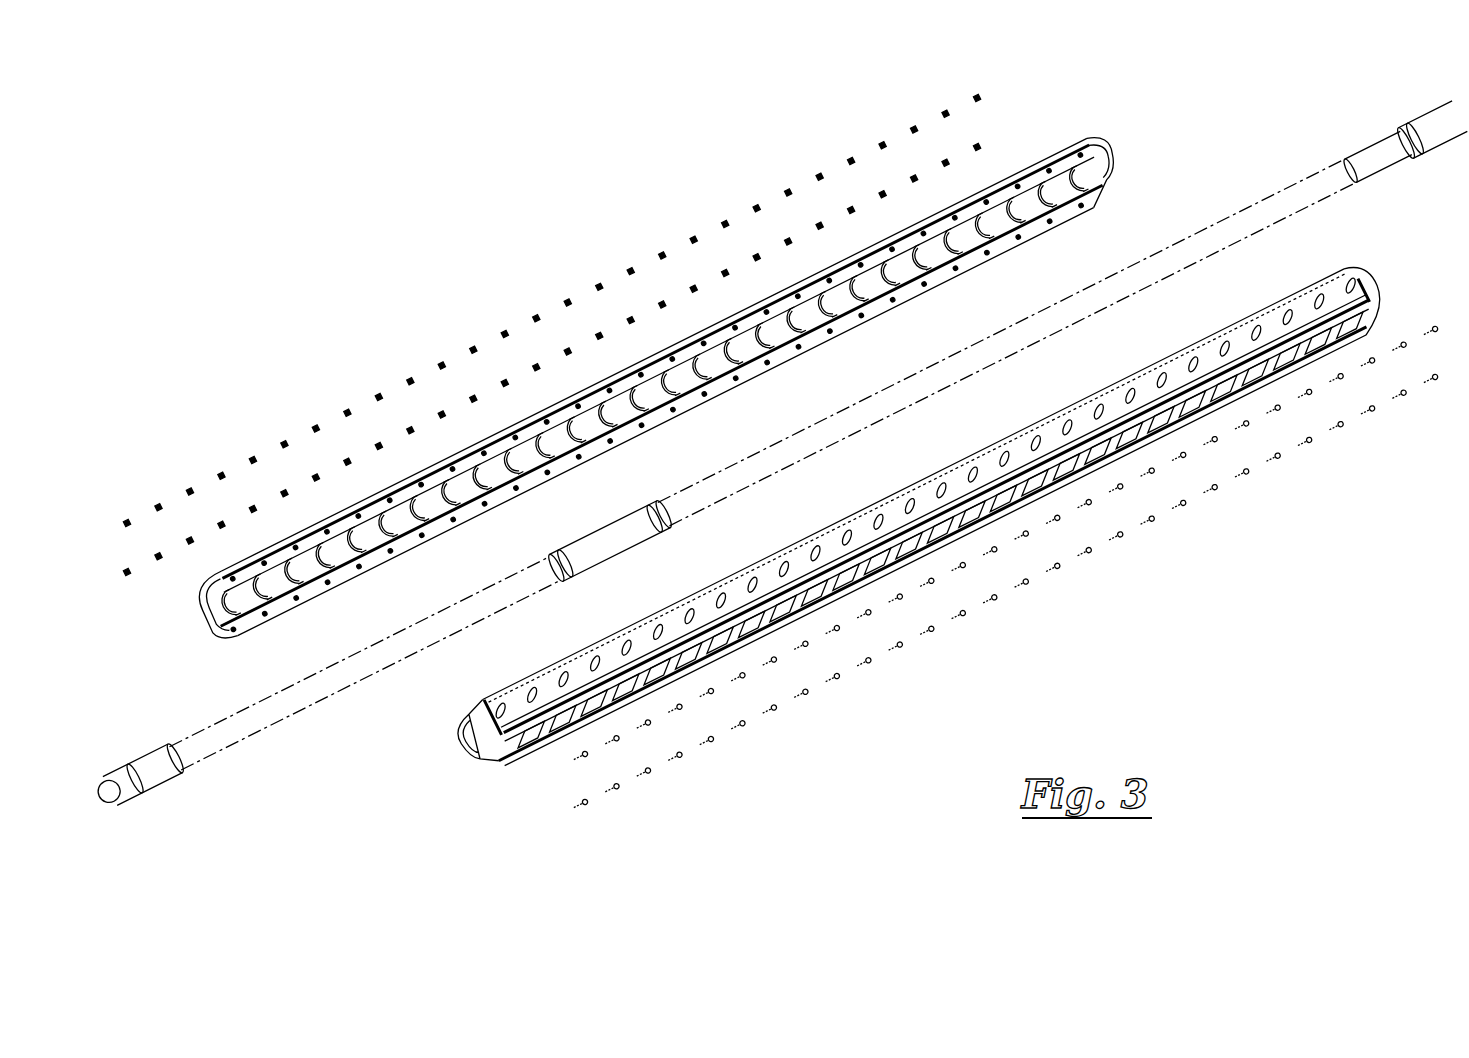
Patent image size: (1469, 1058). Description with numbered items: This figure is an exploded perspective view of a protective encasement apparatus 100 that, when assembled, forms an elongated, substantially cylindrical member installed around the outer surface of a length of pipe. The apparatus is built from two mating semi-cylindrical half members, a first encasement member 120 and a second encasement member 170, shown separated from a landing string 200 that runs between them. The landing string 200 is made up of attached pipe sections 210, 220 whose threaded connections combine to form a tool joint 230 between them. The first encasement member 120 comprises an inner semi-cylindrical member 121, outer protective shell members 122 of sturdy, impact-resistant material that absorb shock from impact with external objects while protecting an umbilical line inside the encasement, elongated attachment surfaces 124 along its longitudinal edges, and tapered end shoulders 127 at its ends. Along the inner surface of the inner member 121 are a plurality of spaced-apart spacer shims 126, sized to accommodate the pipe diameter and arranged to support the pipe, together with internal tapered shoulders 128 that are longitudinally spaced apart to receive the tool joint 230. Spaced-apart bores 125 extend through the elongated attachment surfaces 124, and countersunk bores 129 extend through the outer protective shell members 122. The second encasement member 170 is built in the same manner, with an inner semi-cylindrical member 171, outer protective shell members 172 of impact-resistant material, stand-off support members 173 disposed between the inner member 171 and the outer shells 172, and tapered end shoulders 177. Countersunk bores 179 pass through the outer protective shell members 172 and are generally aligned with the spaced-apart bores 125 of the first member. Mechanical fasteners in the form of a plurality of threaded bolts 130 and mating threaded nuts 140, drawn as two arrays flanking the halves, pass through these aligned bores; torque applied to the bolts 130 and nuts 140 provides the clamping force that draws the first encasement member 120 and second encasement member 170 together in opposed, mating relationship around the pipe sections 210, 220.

The encasement apparatus 100 is at (561, 225).
The first encasement member 120 is at (1062, 150).
The inner semi-cylindrical member 121 is at (492, 478).
The outer protective shell members 122 is at (1030, 155).
The elongated attachment surfaces 124 is at (1093, 195).
The spaced-apart bores 125 is at (860, 300).
The spacer shims 126 is at (955, 240).
The tapered end shoulders 127 is at (1100, 145).
The internal tapered shoulders 128 is at (560, 455).
The countersunk bores 129 is at (347, 503).
The threaded bolts 130 is at (1345, 420).
The threaded nuts 140 is at (910, 175).
The second encasement member 170 is at (920, 497).
The inner semi-cylindrical member 171 is at (500, 760).
The outer protective shell members 172 is at (1345, 275).
The stand-off support members 173 is at (1030, 478).
The tapered end shoulders 177 is at (1372, 290).
The countersunk bores 179 is at (1265, 330).
The landing string 200 is at (1075, 316).
The pipe section 210 is at (205, 745).
The pipe section 220 is at (1335, 170).
The tool joint 230 is at (622, 537).